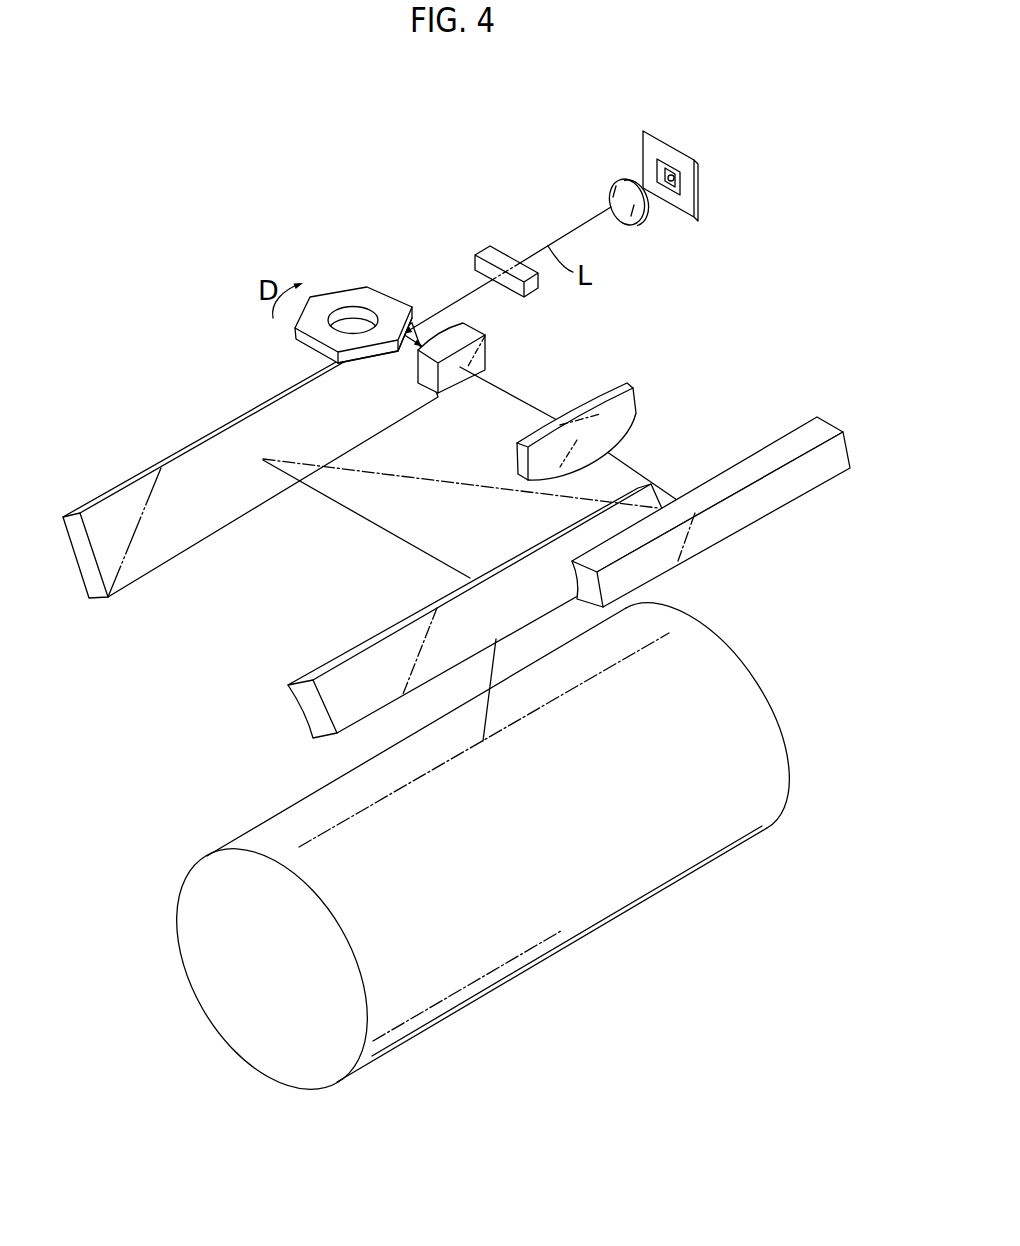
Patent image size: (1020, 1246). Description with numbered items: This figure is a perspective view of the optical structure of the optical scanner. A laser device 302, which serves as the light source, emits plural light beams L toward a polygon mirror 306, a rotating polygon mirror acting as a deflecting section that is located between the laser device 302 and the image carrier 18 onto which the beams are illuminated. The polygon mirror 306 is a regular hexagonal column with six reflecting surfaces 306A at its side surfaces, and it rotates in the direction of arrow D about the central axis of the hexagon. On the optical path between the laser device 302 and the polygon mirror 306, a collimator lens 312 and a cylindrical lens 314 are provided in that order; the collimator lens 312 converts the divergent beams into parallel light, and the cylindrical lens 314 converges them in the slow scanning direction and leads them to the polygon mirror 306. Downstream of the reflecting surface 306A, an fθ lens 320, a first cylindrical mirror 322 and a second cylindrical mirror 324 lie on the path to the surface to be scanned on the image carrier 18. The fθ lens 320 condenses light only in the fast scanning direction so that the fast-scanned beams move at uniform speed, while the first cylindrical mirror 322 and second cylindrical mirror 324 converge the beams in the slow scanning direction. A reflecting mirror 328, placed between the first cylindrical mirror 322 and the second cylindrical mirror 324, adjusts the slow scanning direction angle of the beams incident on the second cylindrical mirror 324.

The laser device 302 is at (671, 145).
The collimator lens 312 is at (624, 179).
The cylindrical lens 314 is at (490, 246).
The polygon mirror 306 is at (335, 286).
The reflecting surfaces 306A is at (370, 357).
The reflecting mirror 328 is at (221, 419).
The fθ lens 320 is at (650, 396).
The second cylindrical mirror 324 is at (360, 638).
The first cylindrical mirror 322 is at (751, 524).
The image carrier 18 is at (767, 686).